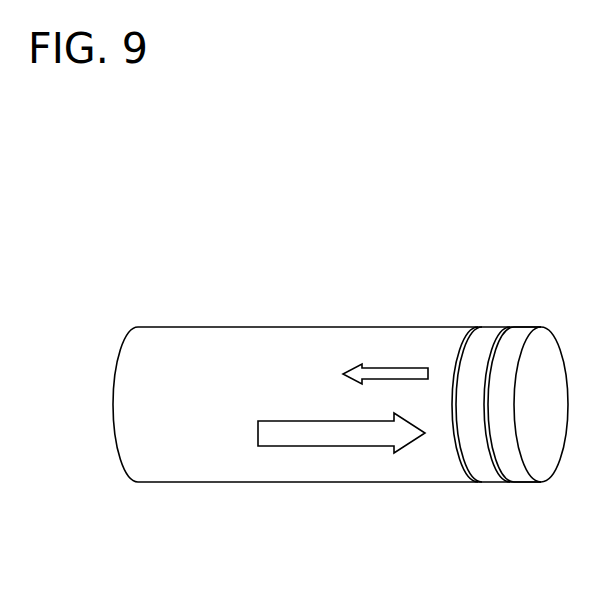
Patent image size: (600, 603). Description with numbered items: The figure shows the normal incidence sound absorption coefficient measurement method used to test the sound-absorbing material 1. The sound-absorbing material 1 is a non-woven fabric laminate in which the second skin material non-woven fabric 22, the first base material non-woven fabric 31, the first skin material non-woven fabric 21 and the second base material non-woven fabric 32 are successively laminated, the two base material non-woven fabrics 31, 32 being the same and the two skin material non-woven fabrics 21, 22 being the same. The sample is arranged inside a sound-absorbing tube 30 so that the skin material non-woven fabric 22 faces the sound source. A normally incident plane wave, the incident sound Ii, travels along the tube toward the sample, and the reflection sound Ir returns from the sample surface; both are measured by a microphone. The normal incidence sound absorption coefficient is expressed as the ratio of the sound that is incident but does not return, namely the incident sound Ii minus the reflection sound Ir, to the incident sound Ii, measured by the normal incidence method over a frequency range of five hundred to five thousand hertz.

The sound-absorbing tube 30 is at (242, 327).
The second skin material non-woven fabric 22 is at (466, 482).
The first base material non-woven fabric 31 is at (484, 480).
The first skin material non-woven fabric 21 is at (506, 480).
The second base material non-woven fabric 32 is at (520, 478).
The sound-absorbing material 1 is at (553, 540).
The incident sound Ii is at (310, 446).
The reflection sound Ir is at (383, 368).